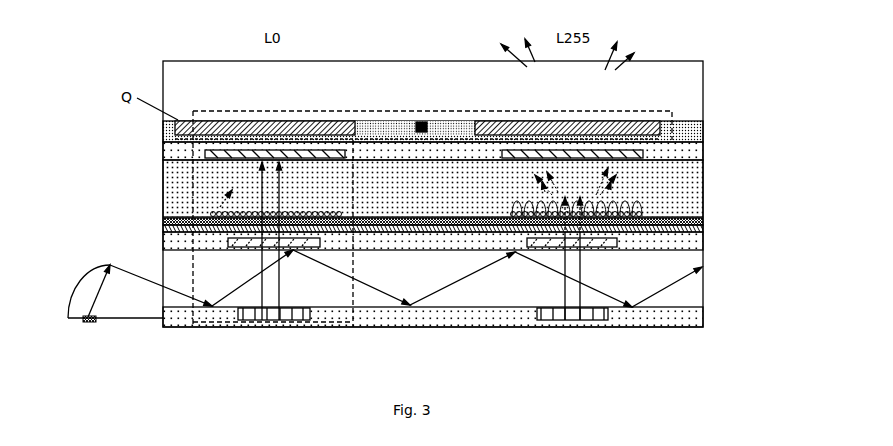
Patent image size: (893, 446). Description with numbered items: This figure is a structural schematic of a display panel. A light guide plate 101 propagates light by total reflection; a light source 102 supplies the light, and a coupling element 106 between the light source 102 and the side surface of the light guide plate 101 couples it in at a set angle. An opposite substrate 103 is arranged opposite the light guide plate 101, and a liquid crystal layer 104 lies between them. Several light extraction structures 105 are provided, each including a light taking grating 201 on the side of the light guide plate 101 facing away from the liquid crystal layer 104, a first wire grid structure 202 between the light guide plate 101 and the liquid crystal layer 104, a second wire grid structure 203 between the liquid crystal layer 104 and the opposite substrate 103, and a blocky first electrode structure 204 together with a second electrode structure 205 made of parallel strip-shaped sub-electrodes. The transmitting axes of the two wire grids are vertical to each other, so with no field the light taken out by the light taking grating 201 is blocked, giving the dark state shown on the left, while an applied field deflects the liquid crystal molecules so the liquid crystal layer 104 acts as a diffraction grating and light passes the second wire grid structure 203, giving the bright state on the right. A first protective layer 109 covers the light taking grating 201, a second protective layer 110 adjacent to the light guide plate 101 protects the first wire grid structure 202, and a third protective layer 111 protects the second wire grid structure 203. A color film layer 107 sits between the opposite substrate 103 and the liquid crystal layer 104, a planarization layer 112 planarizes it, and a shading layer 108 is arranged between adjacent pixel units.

The light guide plate 101 is at (695, 290).
The light source 102 is at (98, 322).
The opposite substrate 103 is at (693, 86).
The liquid crystal layer 104 is at (703, 187).
The light extraction structure 105 is at (163, 181).
The coupling element 106 is at (85, 279).
The color film layer 107 is at (163, 128).
The shading layer 108 is at (427, 122).
The first protective layer 109 is at (700, 317).
The second protective layer 110 is at (703, 240).
The third protective layer 111 is at (703, 152).
The planarization layer 112 is at (703, 129).
The light taking grating 201 is at (298, 324).
The first wire grid structure 202 is at (163, 242).
The second wire grid structure 203 is at (163, 156).
The first electrode structure 204 is at (163, 228).
The second electrode structure 205 is at (163, 215).